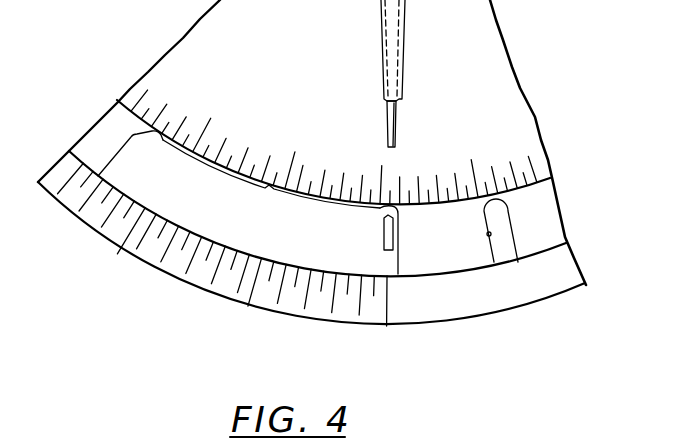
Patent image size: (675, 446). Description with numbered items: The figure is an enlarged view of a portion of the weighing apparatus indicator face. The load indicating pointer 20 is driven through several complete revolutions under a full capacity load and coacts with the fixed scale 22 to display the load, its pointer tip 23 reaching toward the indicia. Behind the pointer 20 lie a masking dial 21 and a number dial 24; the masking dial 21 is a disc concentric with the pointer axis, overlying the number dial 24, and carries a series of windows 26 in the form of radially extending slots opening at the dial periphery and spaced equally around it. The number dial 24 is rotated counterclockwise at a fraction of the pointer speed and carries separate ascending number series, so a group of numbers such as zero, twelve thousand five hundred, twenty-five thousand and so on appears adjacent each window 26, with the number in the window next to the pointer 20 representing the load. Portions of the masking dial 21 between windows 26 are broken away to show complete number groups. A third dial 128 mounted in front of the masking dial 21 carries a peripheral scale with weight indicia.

The third dial 128 is at (283, 43).
The load indicating pointer 20 is at (404, 38).
The masking dial 21 is at (525, 226).
The fixed scale 22 is at (205, 291).
The pointer tip 23 is at (387, 112).
The number dial 24 is at (168, 187).
The windows 26 is at (160, 138).